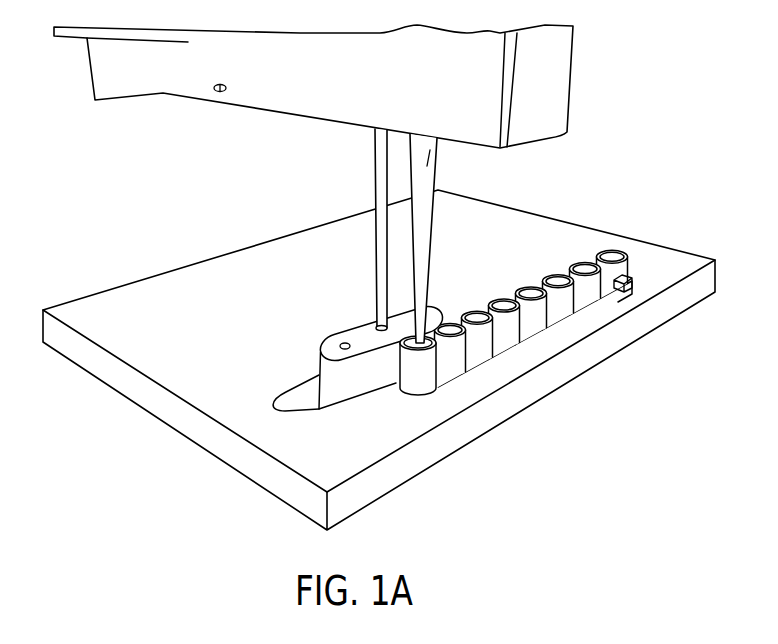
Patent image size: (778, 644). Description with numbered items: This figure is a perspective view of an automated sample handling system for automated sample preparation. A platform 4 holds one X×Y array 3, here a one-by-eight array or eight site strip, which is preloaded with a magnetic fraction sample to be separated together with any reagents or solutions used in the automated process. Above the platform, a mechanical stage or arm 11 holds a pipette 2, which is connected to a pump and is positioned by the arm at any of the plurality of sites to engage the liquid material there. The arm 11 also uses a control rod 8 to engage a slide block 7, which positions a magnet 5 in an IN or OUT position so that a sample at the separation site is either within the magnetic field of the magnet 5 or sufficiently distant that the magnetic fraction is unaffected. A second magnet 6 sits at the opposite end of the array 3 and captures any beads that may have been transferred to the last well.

The pipette 2 is at (440, 165).
The X×Y array 3 is at (517, 335).
The platform 4 is at (118, 300).
The magnet 5 is at (392, 356).
The second magnet 6 is at (622, 288).
The slide block 7 is at (332, 338).
The control rod 8 is at (375, 160).
The arm 11 is at (553, 108).